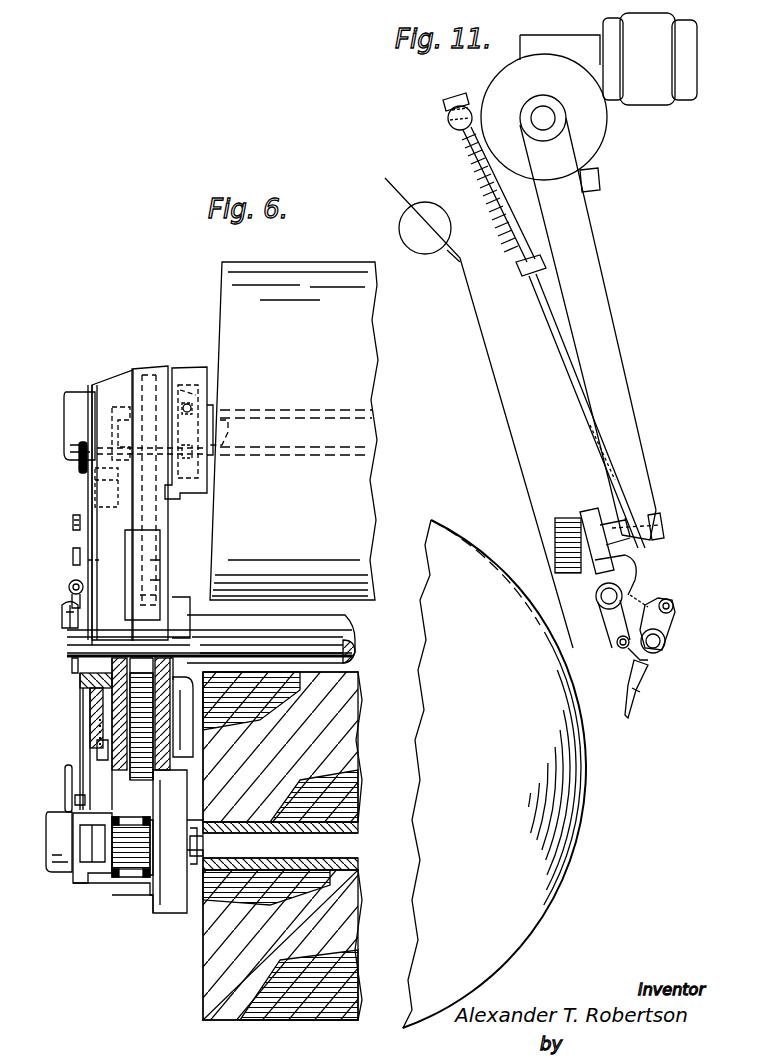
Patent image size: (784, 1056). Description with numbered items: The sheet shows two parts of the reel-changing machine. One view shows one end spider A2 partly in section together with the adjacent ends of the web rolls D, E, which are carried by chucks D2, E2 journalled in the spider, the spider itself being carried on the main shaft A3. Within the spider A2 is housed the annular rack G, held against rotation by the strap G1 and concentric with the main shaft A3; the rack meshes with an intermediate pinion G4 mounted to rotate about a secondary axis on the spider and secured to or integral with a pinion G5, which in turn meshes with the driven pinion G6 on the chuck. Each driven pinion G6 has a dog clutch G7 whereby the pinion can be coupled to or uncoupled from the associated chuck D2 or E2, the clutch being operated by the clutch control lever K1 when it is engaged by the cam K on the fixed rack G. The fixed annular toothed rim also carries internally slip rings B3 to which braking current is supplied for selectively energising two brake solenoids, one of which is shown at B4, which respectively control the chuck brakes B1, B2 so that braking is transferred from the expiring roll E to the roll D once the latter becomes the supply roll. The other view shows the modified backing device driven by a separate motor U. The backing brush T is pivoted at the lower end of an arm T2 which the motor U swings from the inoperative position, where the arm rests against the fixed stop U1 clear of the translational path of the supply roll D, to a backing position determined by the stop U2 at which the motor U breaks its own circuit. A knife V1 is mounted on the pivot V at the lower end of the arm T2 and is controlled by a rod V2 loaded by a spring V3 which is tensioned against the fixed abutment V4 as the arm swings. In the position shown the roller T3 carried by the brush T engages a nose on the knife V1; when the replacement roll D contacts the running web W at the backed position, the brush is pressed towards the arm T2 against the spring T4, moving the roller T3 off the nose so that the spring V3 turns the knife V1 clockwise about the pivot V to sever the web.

In FIG. 6, the roll of web E is at (355, 373).
In FIG. 6, the chuck E2 is at (228, 437).
In FIG. 6, the end spider A2 is at (118, 600).
In FIG. 6, the main shaft A3 is at (340, 635).
In FIG. 6, the roll of web D is at (335, 752).
In FIG. 11, the roll of web D is at (555, 880).
In FIG. 6, the chuck D2 is at (252, 868).
In FIG. 6, the chuck brake B1 is at (168, 890).
In FIG. 6, the chuck brake B2 is at (190, 380).
In FIG. 6, the slip rings B3 is at (98, 722).
In FIG. 6, the brake solenoid B4 is at (190, 735).
In FIG. 6, the annular rack G is at (72, 557).
In FIG. 6, the strap G1 is at (73, 521).
In FIG. 6, the intermediate pinion G4 is at (100, 480).
In FIG. 6, the pinion G5 is at (155, 545).
In FIG. 6, the driven pinion G6 is at (148, 405).
In FIG. 6, the dog clutch G7 is at (118, 412).
In FIG. 6, the clutch control cam K is at (69, 588).
In FIG. 6, the clutch control lever K1 is at (78, 448).
In FIG. 11, the motor U is at (650, 100).
In FIG. 11, the fixed stop U1 is at (597, 180).
In FIG. 11, the stop U2 is at (502, 175).
In FIG. 11, the backing brush T is at (572, 522).
In FIG. 11, the arm T2 is at (595, 317).
In FIG. 11, the roller T3 is at (605, 655).
In FIG. 11, the spring T4 is at (640, 485).
In FIG. 11, the pivot V is at (632, 660).
In FIG. 11, the knife V1 is at (636, 718).
In FIG. 11, the rod V2 is at (553, 336).
In FIG. 11, the spring V3 is at (475, 157).
In FIG. 11, the fixed abutment V4 is at (450, 123).
In FIG. 11, the running web W is at (503, 425).